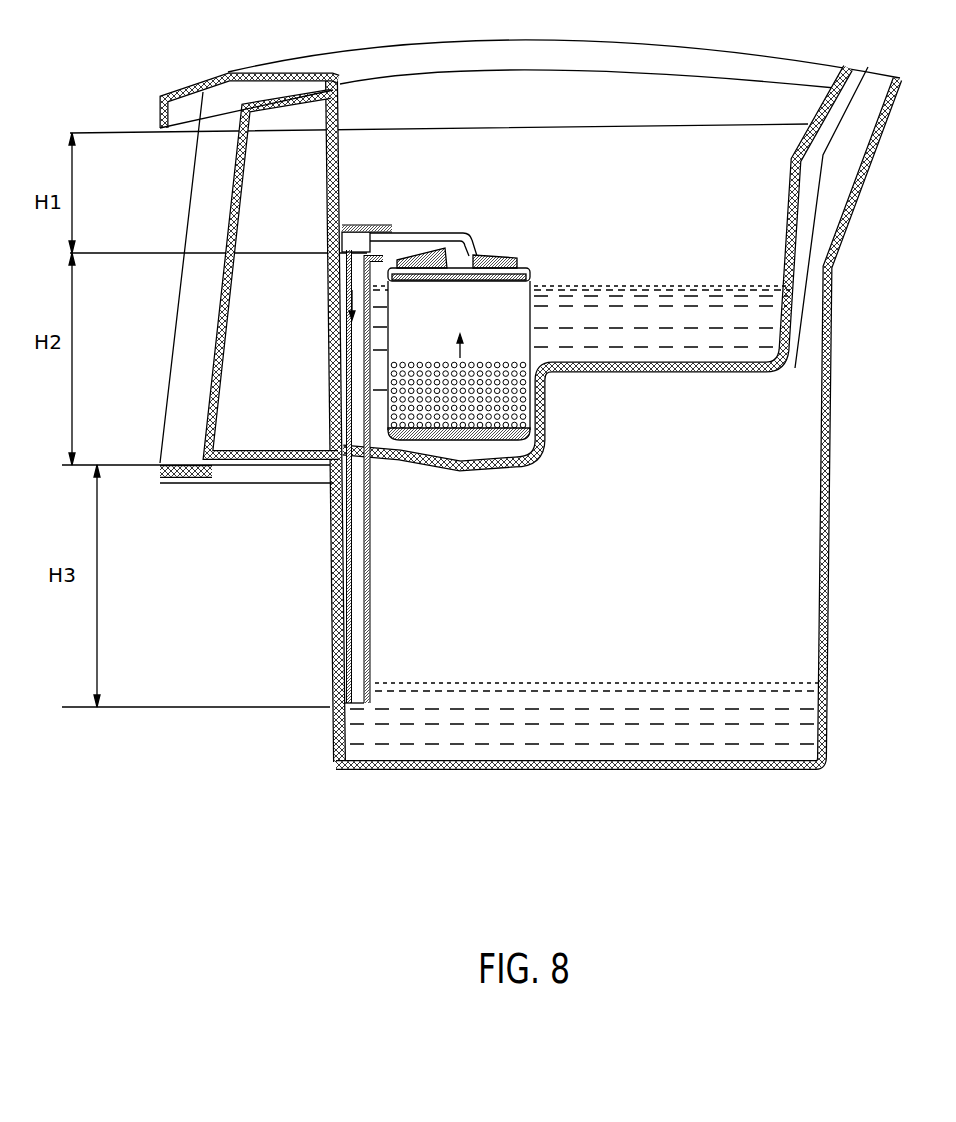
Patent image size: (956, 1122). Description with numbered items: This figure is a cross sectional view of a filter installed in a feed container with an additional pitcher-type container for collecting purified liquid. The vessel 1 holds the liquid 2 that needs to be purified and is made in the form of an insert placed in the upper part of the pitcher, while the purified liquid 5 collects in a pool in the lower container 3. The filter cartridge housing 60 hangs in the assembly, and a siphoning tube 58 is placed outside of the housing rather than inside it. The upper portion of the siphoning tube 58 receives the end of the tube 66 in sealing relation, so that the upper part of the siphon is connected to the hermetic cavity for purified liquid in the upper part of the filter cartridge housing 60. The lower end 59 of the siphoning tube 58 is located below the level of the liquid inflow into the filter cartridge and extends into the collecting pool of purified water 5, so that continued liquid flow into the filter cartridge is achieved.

The container 1 is at (697, 190).
The liquid to be purified 2 is at (753, 322).
The container 3 is at (723, 508).
The purified liquid 5 is at (747, 713).
The siphoning tube 58 is at (357, 570).
The lower end of the siphoning tube 59 is at (373, 707).
The filter cartridge housing 60 is at (520, 302).
The tube 66 is at (390, 229).